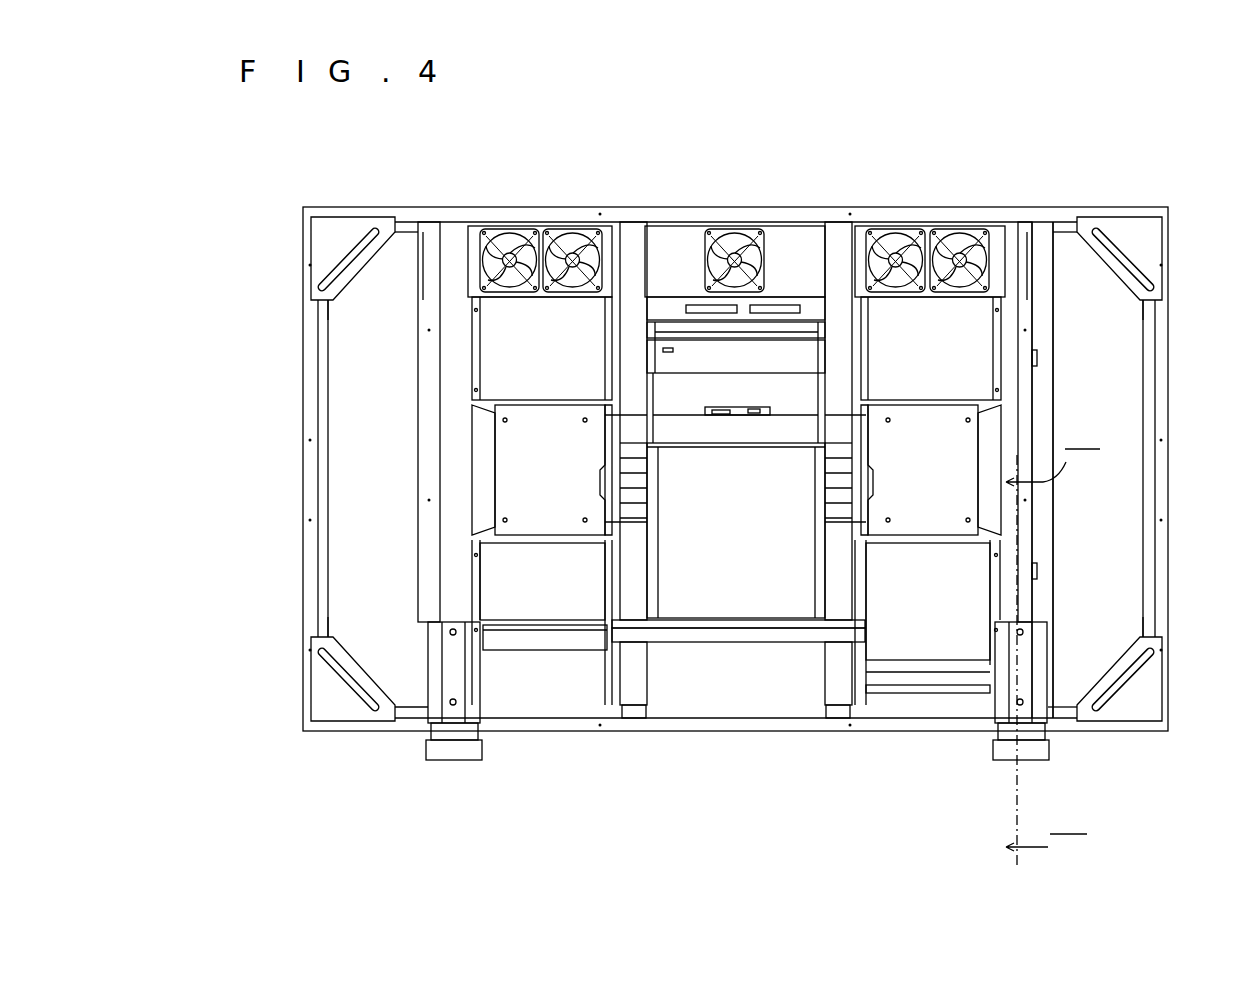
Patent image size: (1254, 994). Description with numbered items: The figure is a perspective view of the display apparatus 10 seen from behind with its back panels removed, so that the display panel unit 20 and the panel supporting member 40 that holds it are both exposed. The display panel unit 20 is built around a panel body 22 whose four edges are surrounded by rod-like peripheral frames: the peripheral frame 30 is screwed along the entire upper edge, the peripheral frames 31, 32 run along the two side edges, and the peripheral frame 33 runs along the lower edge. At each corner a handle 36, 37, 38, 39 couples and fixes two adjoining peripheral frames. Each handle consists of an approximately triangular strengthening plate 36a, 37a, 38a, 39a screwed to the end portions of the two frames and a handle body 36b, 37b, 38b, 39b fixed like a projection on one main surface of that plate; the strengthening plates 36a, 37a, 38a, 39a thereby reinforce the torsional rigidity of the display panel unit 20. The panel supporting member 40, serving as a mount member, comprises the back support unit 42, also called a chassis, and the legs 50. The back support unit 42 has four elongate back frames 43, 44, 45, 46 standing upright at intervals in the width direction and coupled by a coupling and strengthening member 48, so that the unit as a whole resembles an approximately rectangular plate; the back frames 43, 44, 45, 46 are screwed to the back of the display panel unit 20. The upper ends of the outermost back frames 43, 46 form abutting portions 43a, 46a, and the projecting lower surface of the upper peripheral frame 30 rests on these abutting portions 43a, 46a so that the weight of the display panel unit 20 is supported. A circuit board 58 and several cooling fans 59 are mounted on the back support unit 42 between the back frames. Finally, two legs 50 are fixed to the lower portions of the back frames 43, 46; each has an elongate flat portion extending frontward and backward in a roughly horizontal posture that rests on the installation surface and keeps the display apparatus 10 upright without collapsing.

The display apparatus 10 is at (757, 122).
The display panel unit 20 is at (909, 207).
The panel body 22 is at (1102, 500).
The peripheral frame 30 is at (690, 212).
The peripheral frame 31 is at (306, 436).
The peripheral frame 32 is at (1165, 388).
The peripheral frame 33 is at (708, 727).
The handle 36 is at (236, 222).
The strengthening plate 36a is at (333, 243).
The handle body 36b is at (340, 272).
The handle 37 is at (1190, 196).
The strengthening plate 37a is at (1136, 232).
The handle body 37b is at (1128, 260).
The handle 38 is at (1234, 810).
The strengthening plate 38a is at (1135, 712).
The handle body 38b is at (1130, 676).
The handle 39 is at (366, 810).
The strengthening plate 39a is at (336, 712).
The handle body 39b is at (340, 676).
The panel supporting member 40 is at (1042, 320).
The back support unit 42 is at (1058, 364).
The back frame 43 is at (447, 232).
The abutting portion 43a is at (425, 232).
The back frame 44 is at (628, 240).
The back frame 45 is at (836, 240).
The back frame 46 is at (1015, 240).
The abutting portion 46a is at (1045, 222).
The coupling and strengthening member 48 is at (763, 636).
The leg 50 is at (452, 758).
The circuit board 58 is at (725, 610).
The cooling fan 59 is at (513, 232).